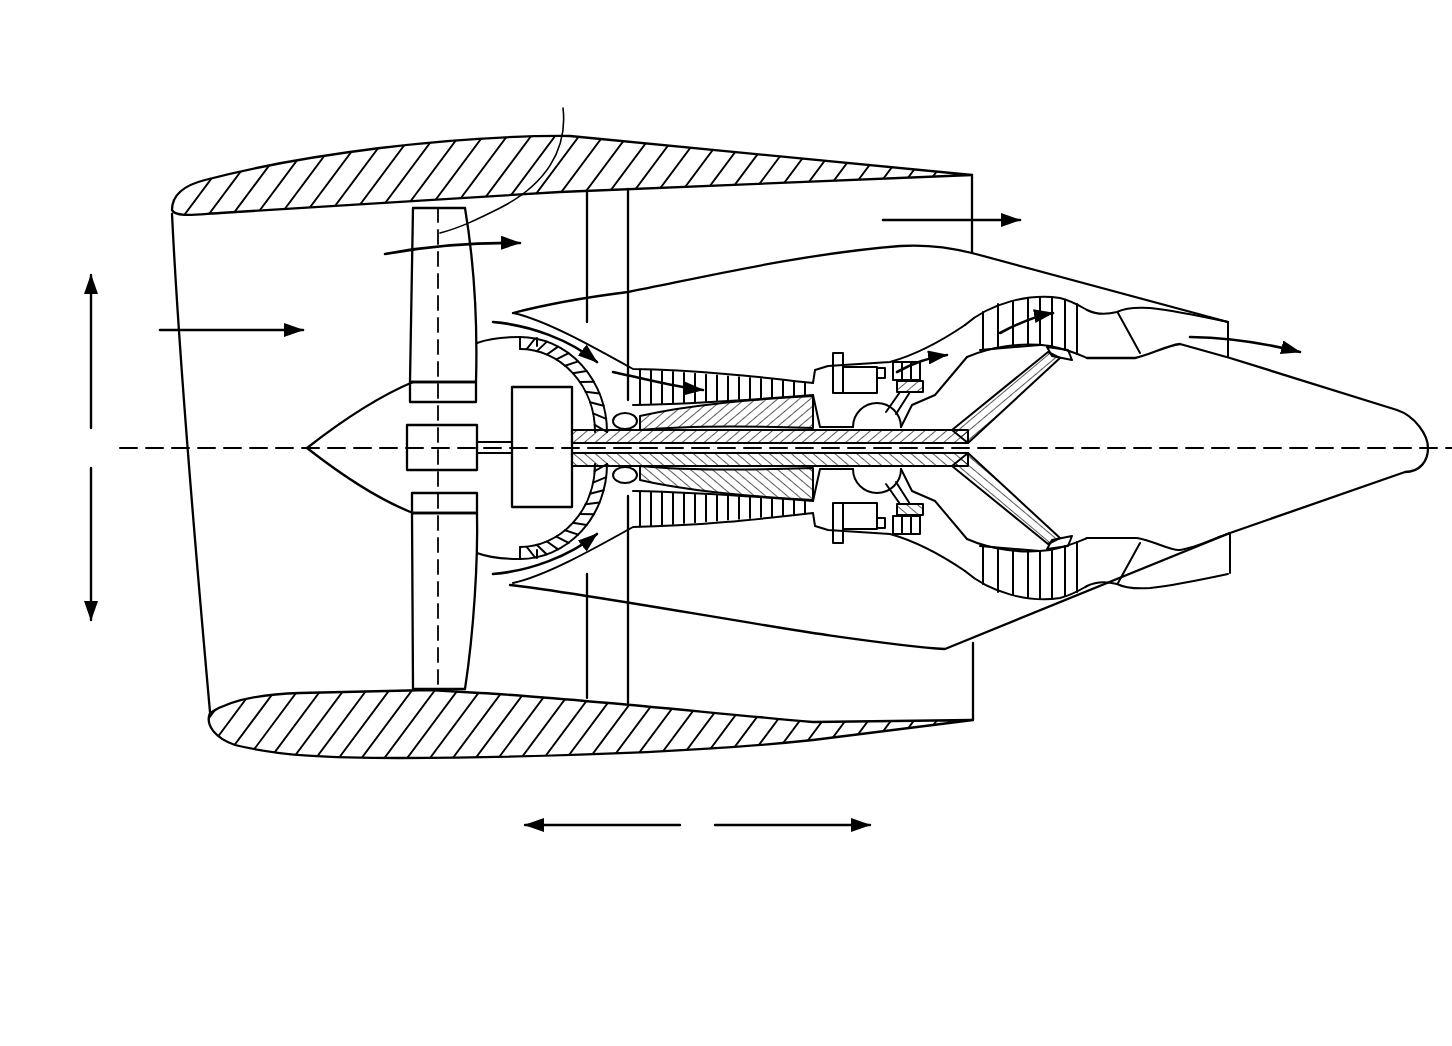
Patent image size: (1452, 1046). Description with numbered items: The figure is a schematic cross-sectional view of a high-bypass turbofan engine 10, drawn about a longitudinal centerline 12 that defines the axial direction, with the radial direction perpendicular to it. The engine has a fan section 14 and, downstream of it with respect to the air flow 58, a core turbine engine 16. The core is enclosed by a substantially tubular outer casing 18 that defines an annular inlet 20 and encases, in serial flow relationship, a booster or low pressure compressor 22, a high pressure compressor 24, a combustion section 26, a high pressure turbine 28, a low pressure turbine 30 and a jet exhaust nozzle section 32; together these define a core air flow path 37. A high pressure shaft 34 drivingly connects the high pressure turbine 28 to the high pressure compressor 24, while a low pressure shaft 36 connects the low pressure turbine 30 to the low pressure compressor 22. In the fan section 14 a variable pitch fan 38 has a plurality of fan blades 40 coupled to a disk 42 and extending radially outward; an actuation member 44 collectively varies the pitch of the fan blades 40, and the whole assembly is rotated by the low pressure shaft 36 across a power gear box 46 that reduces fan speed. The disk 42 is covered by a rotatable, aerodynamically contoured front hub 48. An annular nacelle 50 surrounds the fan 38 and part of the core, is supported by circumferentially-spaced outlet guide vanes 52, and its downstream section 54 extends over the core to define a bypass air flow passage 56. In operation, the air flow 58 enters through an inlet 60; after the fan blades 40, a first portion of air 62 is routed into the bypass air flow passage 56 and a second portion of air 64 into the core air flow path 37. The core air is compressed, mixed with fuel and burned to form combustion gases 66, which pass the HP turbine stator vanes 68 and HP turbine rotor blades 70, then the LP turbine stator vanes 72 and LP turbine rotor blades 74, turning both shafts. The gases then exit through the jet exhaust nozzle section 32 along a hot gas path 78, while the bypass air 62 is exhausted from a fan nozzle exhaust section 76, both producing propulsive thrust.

The turbofan engine 10 is at (1150, 137).
The longitudinal centerline 12 is at (1183, 443).
The fan section 14 is at (353, 227).
The core turbine engine 16 is at (773, 313).
The outer casing 18 is at (810, 635).
The annular inlet 20 is at (513, 585).
The low pressure compressor 22 is at (592, 517).
The high pressure compressor 24 is at (663, 512).
The combustion section 26 is at (855, 520).
The high pressure turbine 28 is at (932, 529).
The low pressure turbine 30 is at (1070, 598).
The jet exhaust nozzle section 32 is at (1140, 571).
The high pressure shaft 34 is at (900, 417).
The low pressure shaft 36 is at (1010, 390).
The core air flow path 37 is at (613, 518).
The fan 38 is at (372, 508).
The fan blades 40 is at (410, 617).
The disk 42 is at (427, 390).
The actuation member 44 is at (407, 433).
The power gear box 46 is at (552, 402).
The front hub 48 is at (313, 467).
The nacelle 50 is at (467, 761).
The outlet guide vanes 52 is at (630, 227).
The downstream section 54 is at (910, 163).
The bypass air flow passage 56 is at (797, 232).
The air flow 58 is at (222, 328).
The inlet 60 is at (203, 677).
The first portion of air 62 is at (430, 247).
The second portion of air 64 is at (513, 320).
The combustion gases 66 is at (1020, 308).
The HP turbine stator vanes 68 is at (893, 521).
The HP turbine rotor blades 70 is at (920, 500).
The LP turbine stator vanes 72 is at (977, 578).
The LP turbine rotor blades 74 is at (990, 583).
The fan nozzle exhaust section 76 is at (957, 207).
The hot gas path 78 is at (960, 340).